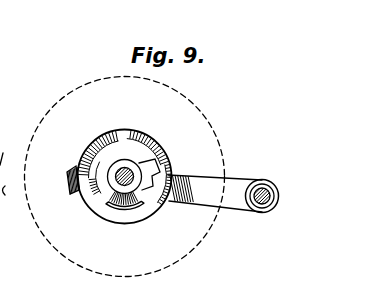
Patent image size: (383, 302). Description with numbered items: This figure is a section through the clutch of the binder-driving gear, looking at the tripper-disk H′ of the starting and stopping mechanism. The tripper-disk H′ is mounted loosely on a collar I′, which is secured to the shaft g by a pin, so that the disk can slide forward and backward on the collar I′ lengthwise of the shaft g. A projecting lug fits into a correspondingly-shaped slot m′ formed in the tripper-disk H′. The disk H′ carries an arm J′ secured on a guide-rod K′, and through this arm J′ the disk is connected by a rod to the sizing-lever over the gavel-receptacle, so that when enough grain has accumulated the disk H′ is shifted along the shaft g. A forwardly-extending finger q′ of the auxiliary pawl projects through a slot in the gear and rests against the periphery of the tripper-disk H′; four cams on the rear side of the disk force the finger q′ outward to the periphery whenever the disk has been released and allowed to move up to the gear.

The tripper-disk H′ is at (160, 158).
The slot m′ is at (148, 188).
The shaft g is at (121, 182).
The collar I′ is at (117, 176).
The finger q′ is at (69, 185).
The arm J′ is at (199, 182).
The guide-rod K′ is at (266, 194).